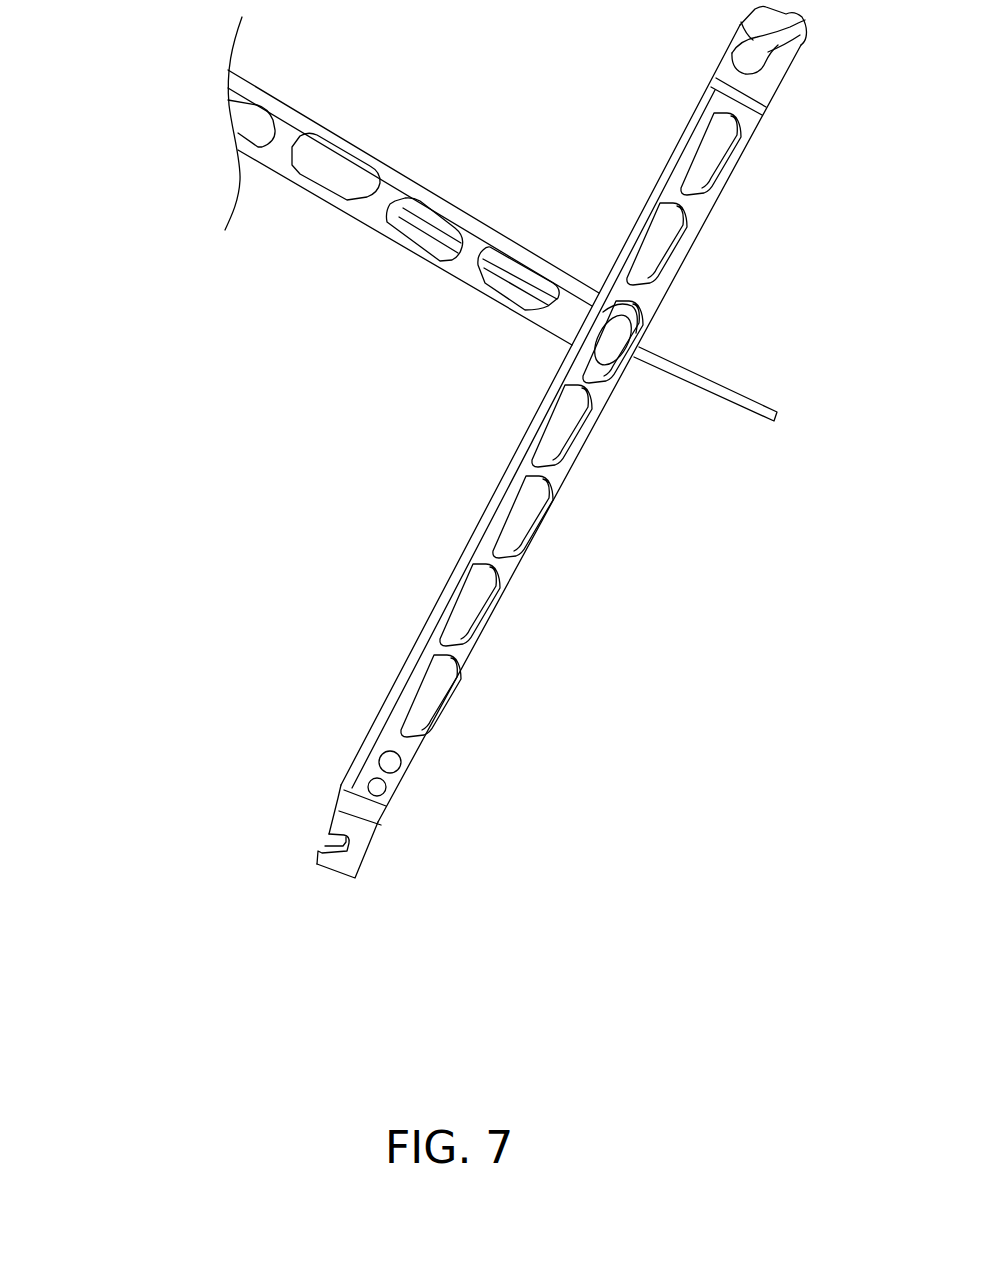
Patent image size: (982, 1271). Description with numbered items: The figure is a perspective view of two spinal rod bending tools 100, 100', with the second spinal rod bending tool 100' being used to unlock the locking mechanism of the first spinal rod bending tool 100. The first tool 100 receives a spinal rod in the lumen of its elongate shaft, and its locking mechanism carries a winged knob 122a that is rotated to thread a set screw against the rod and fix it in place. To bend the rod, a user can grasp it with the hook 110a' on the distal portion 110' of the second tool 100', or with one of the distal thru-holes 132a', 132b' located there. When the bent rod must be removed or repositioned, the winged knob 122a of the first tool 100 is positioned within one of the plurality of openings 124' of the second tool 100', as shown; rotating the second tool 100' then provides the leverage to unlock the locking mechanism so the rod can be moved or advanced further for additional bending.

The spinal rod bending tool 100 is at (410, 189).
The second spinal rod bending tool 100' is at (460, 449).
The winged knob 122a is at (643, 338).
The openings 124' is at (664, 406).
The distal thru-hole 132a' is at (200, 737).
The distal thru-hole 132b' is at (308, 708).
The distal portion 110' is at (255, 837).
The hook 110a' is at (204, 823).